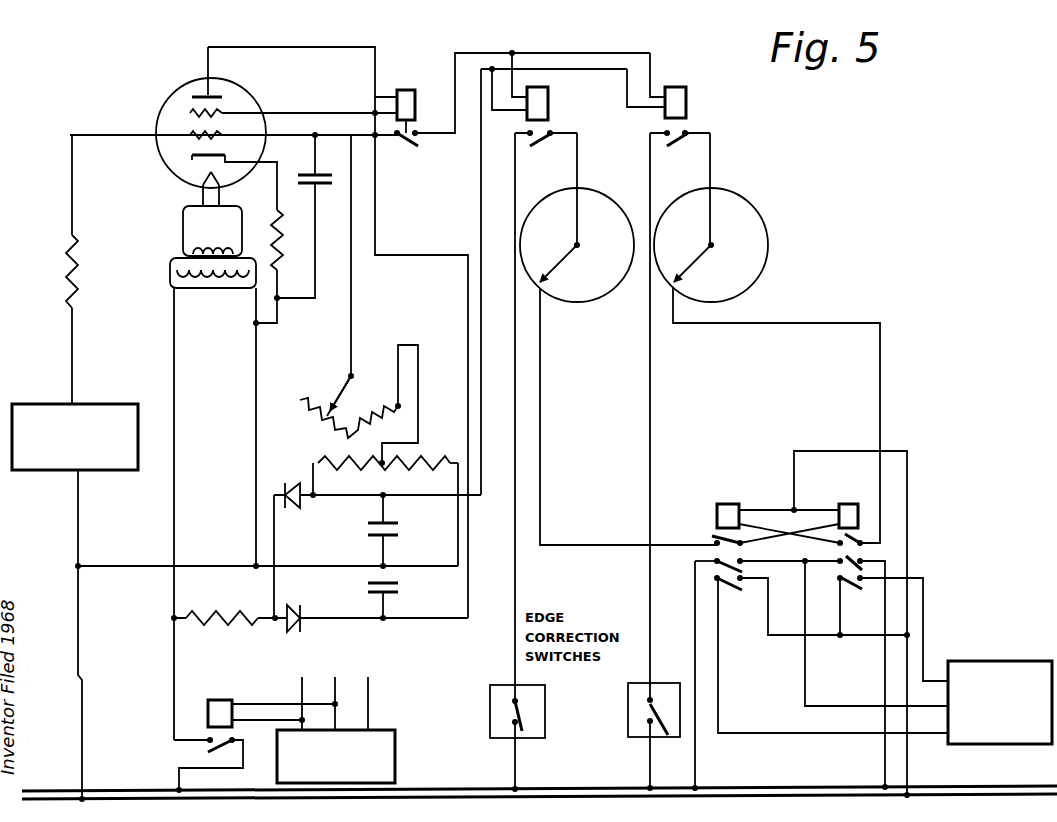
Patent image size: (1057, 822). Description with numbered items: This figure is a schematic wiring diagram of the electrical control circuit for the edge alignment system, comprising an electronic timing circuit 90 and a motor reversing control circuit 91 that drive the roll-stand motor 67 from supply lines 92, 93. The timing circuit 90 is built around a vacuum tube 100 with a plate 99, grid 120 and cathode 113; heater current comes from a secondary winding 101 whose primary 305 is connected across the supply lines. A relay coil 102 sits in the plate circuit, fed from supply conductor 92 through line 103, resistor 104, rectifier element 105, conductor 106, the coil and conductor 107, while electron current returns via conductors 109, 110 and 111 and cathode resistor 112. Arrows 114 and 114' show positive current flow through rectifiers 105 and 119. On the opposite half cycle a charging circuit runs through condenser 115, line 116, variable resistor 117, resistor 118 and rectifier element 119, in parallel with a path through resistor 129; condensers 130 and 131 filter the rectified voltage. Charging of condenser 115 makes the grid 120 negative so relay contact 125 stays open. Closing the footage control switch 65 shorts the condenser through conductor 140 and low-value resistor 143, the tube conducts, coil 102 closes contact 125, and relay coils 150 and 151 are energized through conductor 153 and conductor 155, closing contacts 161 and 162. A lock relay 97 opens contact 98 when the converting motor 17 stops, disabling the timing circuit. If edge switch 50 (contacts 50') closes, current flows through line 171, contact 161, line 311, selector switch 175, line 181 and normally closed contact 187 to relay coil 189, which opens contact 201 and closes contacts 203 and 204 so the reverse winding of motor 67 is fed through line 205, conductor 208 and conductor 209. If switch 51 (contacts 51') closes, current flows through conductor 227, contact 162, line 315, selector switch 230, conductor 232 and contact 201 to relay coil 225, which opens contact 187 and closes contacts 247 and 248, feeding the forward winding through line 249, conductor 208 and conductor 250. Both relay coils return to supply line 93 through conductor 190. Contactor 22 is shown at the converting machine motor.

The electronic timing circuit 90 is at (150, 112).
The plate 99 is at (218, 92).
The vacuum tube 100 is at (180, 92).
The grid 120 is at (190, 137).
The cathode 113 is at (190, 158).
The secondary winding 101 is at (208, 248).
The primary 305 is at (208, 286).
The cathode resistor 112 is at (283, 240).
The condenser 115 is at (322, 188).
The conductor 107 is at (292, 48).
The relay coil 102 is at (397, 90).
The conductor 153 is at (453, 100).
The conductor 155 is at (478, 185).
The relay coil 150 is at (548, 105).
The relay coil 151 is at (686, 105).
The relay contact 125 is at (398, 152).
The conductor 106 is at (378, 228).
The contact 161 is at (542, 146).
The line 311 is at (578, 180).
The selector switch 175 is at (597, 304).
The contact 162 is at (677, 146).
The line 315 is at (712, 176).
The selector switch 230 is at (760, 284).
The line 181 is at (542, 418).
The conductor 232 is at (882, 375).
The motor control circuit 91 is at (766, 455).
The conductor 190 is at (838, 450).
The relay coil 225 is at (728, 504).
The relay coil 189 is at (850, 504).
The normally closed contact 187 is at (712, 536).
The normally closed contact 201 is at (845, 534).
The contact 203 is at (846, 556).
The contact 247 is at (716, 562).
The contact 248 is at (730, 590).
The contact 204 is at (845, 590).
The conductor 208 is at (806, 668).
The conductor 209 is at (925, 638).
The conductor 250 is at (768, 733).
The line 205 is at (885, 742).
The line 249 is at (697, 762).
The motor 67 is at (1012, 661).
The supply line 93 is at (962, 790).
The supply line 92 is at (1006, 796).
The line 171 is at (516, 592).
The conductor 227 is at (648, 592).
The switch 50 is at (485, 706).
The contacts 50' is at (468, 732).
The switch 51 is at (625, 710).
The contacts 51' is at (667, 739).
The motor contactor 22 is at (372, 690).
The converting motor 17 is at (396, 745).
The lock relay 97 is at (219, 700).
The contact 98 is at (210, 752).
The line 103 is at (174, 668).
The conductor 109 is at (80, 514).
The conductor 110 is at (99, 570).
The resistor 104 is at (212, 614).
The rectifier element 105 is at (294, 604).
The arrow 114 is at (323, 636).
The conductor 111 is at (254, 527).
The rectifier element 119 is at (292, 512).
The arrow 114' is at (252, 458).
The resistor 118 is at (326, 458).
The variable resistor 117 is at (326, 398).
The resistor 129 is at (420, 462).
The condenser 130 is at (392, 524).
The condenser 131 is at (395, 584).
The line 116 is at (352, 308).
The footage control switch 65 is at (100, 404).
The conductor 140 is at (75, 345).
The resistor 143 is at (84, 280).